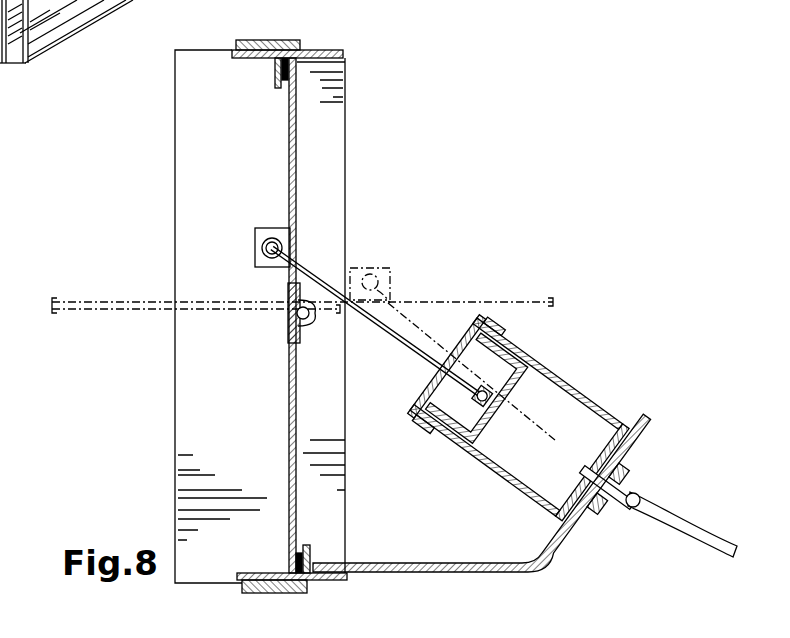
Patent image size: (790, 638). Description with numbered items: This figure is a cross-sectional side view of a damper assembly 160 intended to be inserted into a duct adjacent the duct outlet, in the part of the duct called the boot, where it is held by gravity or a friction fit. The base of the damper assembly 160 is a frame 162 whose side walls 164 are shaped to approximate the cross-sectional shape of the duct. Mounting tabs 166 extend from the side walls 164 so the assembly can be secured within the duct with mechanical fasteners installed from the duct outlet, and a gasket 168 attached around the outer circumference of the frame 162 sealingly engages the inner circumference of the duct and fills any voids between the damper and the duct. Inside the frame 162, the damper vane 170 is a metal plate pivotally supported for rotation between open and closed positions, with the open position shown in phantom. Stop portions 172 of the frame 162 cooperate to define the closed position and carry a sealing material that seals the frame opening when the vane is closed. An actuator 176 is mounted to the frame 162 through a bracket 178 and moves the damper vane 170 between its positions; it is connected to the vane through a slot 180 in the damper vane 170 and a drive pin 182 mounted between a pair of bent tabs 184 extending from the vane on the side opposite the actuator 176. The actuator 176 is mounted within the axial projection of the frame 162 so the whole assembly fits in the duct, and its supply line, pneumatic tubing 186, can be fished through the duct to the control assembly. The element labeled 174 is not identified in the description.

The damper assembly 160 is at (100, 146).
The frame 162 is at (320, 102).
The side walls 164 is at (330, 50).
The mounting tabs 166 is at (200, 173).
The gasket 168 is at (270, 40).
The damper vane 170 is at (290, 175).
The stop portions 172 is at (276, 72).
The end plate 174 is at (307, 50).
The actuator 176 is at (596, 386).
The bracket 178 is at (443, 562).
The slot 180 is at (294, 217).
The drive pin 182 is at (262, 248).
The bent tabs 184 is at (257, 262).
The pneumatic tubing 186 is at (686, 527).